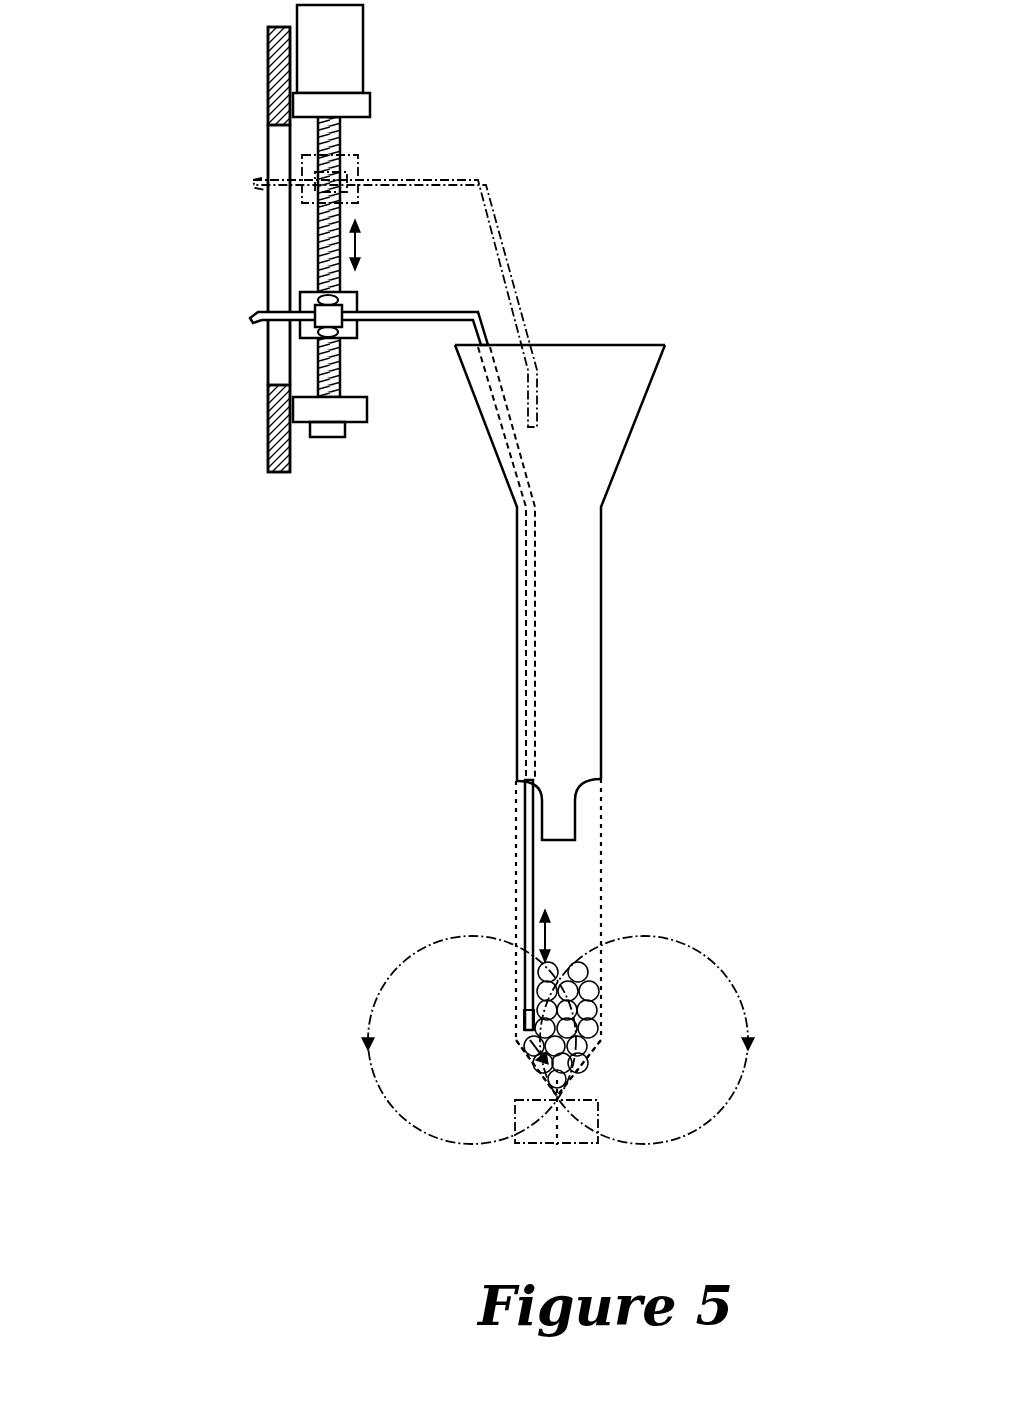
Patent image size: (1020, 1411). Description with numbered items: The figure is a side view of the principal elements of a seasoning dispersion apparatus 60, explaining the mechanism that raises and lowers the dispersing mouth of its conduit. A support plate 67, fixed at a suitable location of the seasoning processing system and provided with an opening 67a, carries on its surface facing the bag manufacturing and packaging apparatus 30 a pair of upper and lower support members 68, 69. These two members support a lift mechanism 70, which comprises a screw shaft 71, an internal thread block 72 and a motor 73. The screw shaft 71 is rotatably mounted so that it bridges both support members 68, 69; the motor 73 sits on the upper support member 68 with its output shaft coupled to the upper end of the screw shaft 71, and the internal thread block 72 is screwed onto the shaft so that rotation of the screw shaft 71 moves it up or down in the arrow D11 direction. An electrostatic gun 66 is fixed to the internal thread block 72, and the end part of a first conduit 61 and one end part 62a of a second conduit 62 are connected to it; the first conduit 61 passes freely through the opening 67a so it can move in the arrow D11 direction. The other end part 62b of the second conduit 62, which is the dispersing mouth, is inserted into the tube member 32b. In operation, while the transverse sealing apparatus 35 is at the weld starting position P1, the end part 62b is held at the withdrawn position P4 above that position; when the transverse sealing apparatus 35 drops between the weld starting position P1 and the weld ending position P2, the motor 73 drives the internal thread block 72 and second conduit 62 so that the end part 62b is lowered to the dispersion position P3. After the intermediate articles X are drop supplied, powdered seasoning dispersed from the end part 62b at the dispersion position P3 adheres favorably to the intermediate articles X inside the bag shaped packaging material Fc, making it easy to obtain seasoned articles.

The seasoning dispersion apparatus 60 is at (148, 56).
The motor 73 is at (350, 45).
The upper support member 68 is at (357, 104).
The lift mechanism 70 is at (395, 130).
The opening 67a is at (280, 222).
The support plate 67 is at (278, 425).
The screw shaft 71 is at (338, 366).
The lower support member 69 is at (357, 412).
The internal thread block 72 is at (353, 337).
The electrostatic gun 66 is at (322, 310).
The second conduit 62 is at (441, 311).
The one end part of the second conduit 62a is at (370, 311).
The end part of the second conduit 62b is at (526, 1012).
The first conduit 61 is at (258, 324).
The arrow D11 direction D11 is at (471, 591).
The bag manufacturing and packaging apparatus 30 is at (670, 336).
The tube member 32b is at (600, 347).
The transverse sealing apparatus 35 is at (604, 1102).
The bag shaped packaging material Fc is at (605, 880).
The intermediate articles X is at (592, 992).
The weld starting position P1 is at (590, 940).
The weld ending position P2 is at (632, 1122).
The dispersion position P3 is at (496, 1030).
The withdrawn position P4 is at (496, 890).